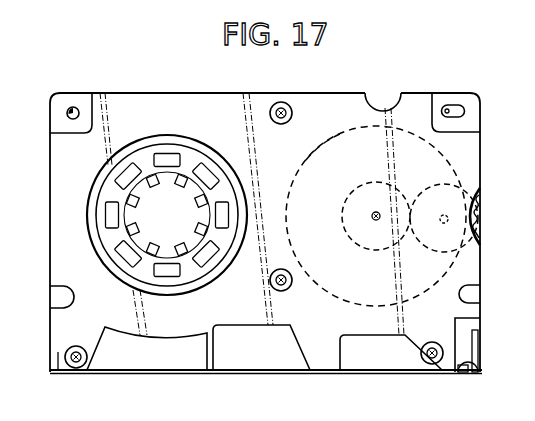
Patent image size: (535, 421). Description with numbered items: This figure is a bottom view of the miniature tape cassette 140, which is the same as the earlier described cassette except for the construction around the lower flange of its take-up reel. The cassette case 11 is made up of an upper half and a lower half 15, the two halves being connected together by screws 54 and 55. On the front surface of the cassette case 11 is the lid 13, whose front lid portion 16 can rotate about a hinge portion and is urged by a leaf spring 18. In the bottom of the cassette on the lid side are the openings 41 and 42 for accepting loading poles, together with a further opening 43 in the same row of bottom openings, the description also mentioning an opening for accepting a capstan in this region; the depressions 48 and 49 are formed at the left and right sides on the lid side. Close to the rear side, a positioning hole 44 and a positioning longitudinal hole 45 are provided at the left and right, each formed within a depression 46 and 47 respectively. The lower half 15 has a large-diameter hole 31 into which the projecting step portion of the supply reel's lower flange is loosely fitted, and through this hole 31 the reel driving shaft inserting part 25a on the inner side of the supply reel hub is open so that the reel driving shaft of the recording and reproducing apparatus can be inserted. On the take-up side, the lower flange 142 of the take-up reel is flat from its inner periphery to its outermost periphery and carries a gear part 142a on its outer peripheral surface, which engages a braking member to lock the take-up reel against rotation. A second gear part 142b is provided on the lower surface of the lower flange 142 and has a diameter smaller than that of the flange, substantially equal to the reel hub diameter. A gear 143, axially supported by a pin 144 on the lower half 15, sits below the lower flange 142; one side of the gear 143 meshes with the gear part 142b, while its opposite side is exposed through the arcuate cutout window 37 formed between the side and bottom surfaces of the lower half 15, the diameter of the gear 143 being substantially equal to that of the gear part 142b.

The tape cassette 140 is at (100, 70).
The cassette case 11 is at (170, 91).
The lid 13 is at (204, 372).
The lower half 15 is at (327, 92).
The front lid portion 16 is at (300, 374).
The leaf spring 18 is at (478, 360).
The reel driving shaft inserting part 25a is at (133, 210).
The hole 31 is at (89, 229).
The cutout window 37 is at (481, 198).
The opening 41 is at (147, 360).
The opening 42 is at (255, 358).
The third block 43 is at (378, 360).
The positioning hole 44 is at (73, 107).
The positioning longitudinal hole 45 is at (446, 106).
The depression 46 is at (50, 118).
The depression 47 is at (472, 101).
The depression 48 is at (50, 297).
The depression 49 is at (470, 294).
The screw 54 is at (289, 290).
The screw 55 is at (288, 120).
The lower flange 142 is at (302, 176).
The gear part 142a is at (308, 155).
The gear part 142b is at (346, 234).
The gear 143 is at (480, 222).
The pin 144 is at (403, 250).